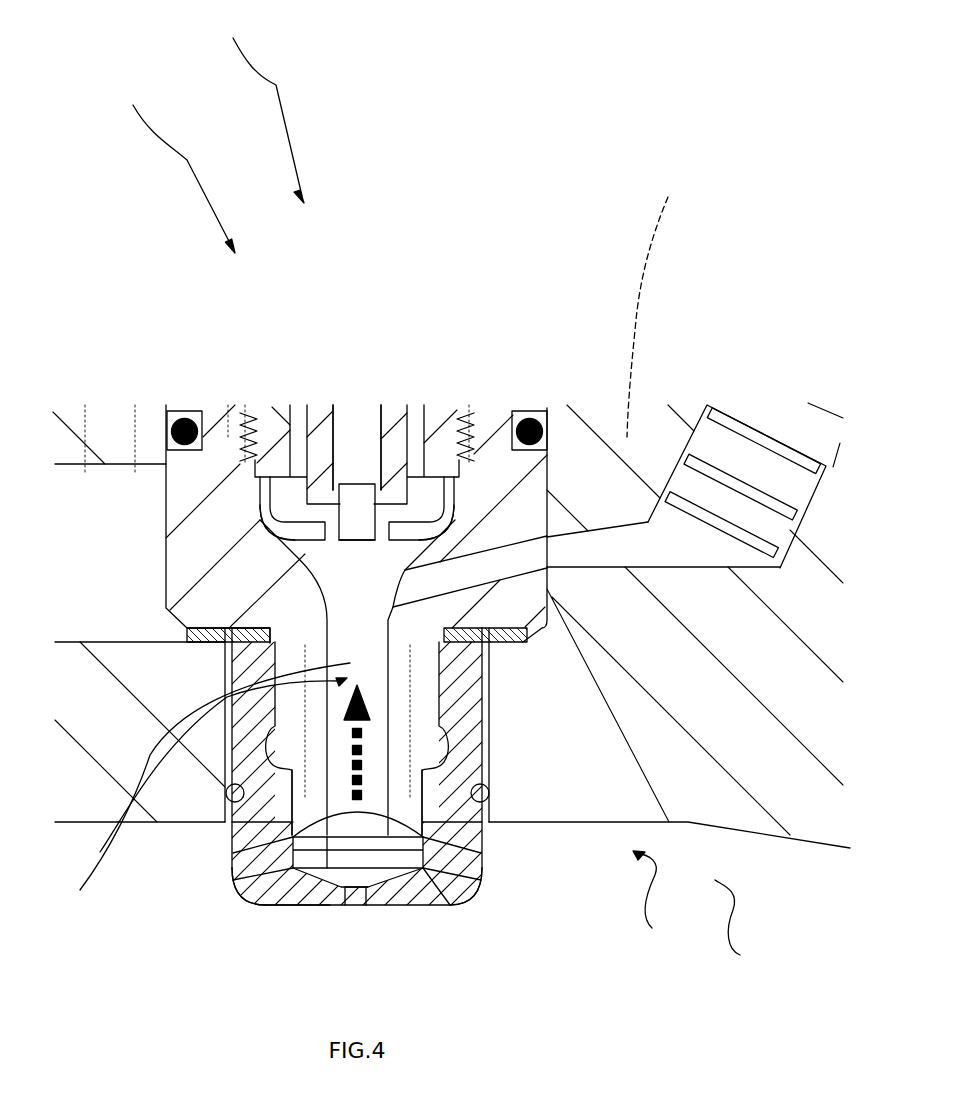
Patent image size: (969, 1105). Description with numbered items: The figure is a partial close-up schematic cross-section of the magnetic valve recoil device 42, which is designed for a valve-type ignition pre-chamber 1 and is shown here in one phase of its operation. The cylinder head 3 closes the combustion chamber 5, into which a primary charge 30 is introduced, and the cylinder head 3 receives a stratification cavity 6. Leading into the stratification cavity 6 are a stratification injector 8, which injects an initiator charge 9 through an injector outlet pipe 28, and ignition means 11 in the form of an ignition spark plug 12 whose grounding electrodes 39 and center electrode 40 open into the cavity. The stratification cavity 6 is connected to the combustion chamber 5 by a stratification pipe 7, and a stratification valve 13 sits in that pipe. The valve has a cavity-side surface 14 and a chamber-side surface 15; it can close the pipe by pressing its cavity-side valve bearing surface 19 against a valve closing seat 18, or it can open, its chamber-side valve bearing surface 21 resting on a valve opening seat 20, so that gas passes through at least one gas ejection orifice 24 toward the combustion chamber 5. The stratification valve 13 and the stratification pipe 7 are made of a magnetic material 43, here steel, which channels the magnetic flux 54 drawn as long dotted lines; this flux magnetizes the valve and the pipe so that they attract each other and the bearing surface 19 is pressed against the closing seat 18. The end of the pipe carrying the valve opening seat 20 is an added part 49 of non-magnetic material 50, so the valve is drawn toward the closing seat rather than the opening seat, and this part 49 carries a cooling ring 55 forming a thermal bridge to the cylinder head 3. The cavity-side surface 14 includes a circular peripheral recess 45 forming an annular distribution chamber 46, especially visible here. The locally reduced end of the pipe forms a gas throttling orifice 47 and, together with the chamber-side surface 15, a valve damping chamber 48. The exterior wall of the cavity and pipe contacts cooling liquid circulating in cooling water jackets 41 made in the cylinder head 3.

The valve-type ignition pre-chamber 1 is at (178, 169).
The cylinder head 3 is at (650, 437).
The combustion chamber 5 is at (732, 924).
The stratification cavity 6 is at (477, 468).
The stratification pipe 7 is at (214, 770).
The stratification injector 8 is at (746, 458).
The initiator charge 9 is at (203, 782).
The ignition means 11 is at (352, 437).
The ignition spark plug 12 is at (366, 438).
The stratification valve 13 is at (405, 906).
The cavity-side surface 14 is at (430, 705).
The chamber-side surface 15 is at (330, 906).
The valve closing seat 18 is at (440, 736).
The cavity-side valve bearing surface 19 is at (445, 767).
The valve opening seat 20 is at (305, 907).
The chamber-side valve bearing surface 21 is at (260, 905).
The gas ejection orifice 24 is at (482, 858).
The injector outlet pipe 28 is at (638, 550).
The primary charge 30 is at (655, 897).
The grounding electrodes 39 is at (280, 495).
The center electrode 40 is at (355, 542).
The cooling water jackets 41 is at (68, 533).
The magnetic valve recoil device 42 is at (261, 109).
The magnetic material 43 is at (368, 792).
The circular peripheral recess 45 is at (233, 830).
The annular distribution chamber 46 is at (482, 838).
The gas throttling orifice 47 is at (357, 852).
The valve damping chamber 48 is at (388, 868).
The added part 49 is at (436, 906).
The non-magnetic material 50 is at (485, 885).
The magnetic flux 54 is at (654, 306).
The cooling ring 55 is at (490, 793).